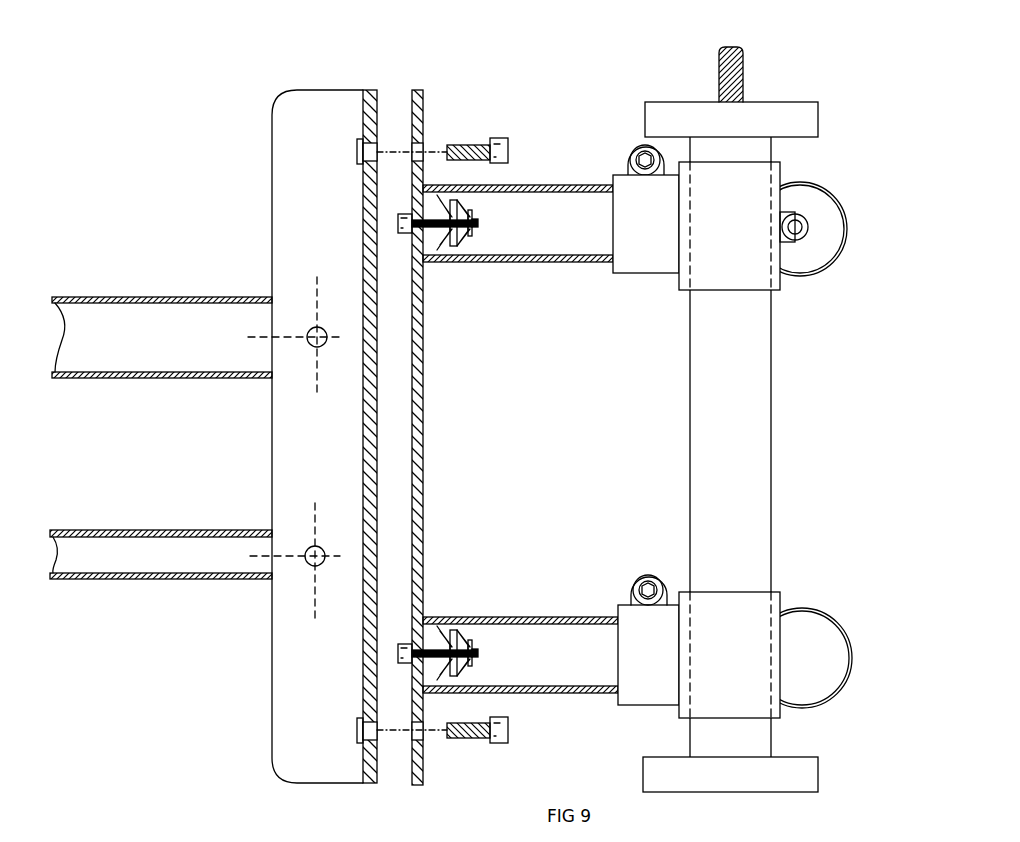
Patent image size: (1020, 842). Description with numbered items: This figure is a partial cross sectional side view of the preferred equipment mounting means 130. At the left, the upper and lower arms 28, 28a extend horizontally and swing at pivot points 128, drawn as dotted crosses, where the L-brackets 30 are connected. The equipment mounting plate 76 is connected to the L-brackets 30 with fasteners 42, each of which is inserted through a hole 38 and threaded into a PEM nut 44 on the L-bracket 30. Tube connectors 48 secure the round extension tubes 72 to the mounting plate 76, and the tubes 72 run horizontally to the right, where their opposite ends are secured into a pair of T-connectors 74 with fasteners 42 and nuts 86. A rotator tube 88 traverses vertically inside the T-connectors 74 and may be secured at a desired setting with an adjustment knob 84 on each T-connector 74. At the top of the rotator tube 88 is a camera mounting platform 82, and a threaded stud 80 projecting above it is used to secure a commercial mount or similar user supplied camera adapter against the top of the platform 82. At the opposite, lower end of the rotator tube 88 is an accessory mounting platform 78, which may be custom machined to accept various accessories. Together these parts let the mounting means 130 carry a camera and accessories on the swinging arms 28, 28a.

The upper arm 28 is at (140, 353).
The lower arm 28a is at (210, 558).
The L-bracket 30 is at (305, 624).
The hole 38 is at (420, 150).
The fastener 42 is at (510, 150).
The PEM nut 44 is at (372, 150).
The tube connector 48 is at (458, 653).
The extension tube 72 is at (538, 655).
The T-connector 74 is at (716, 262).
The equipment mounting plate 76 is at (422, 428).
The accessory mounting platform 78 is at (677, 780).
The threaded stud 80 is at (743, 68).
The camera mounting platform 82 is at (770, 127).
The adjustment knob 84 is at (823, 235).
The nut 86 is at (800, 240).
The rotator tube 88 is at (730, 365).
The pivot point 128 is at (305, 335).
The equipment mounting means 130 is at (795, 500).